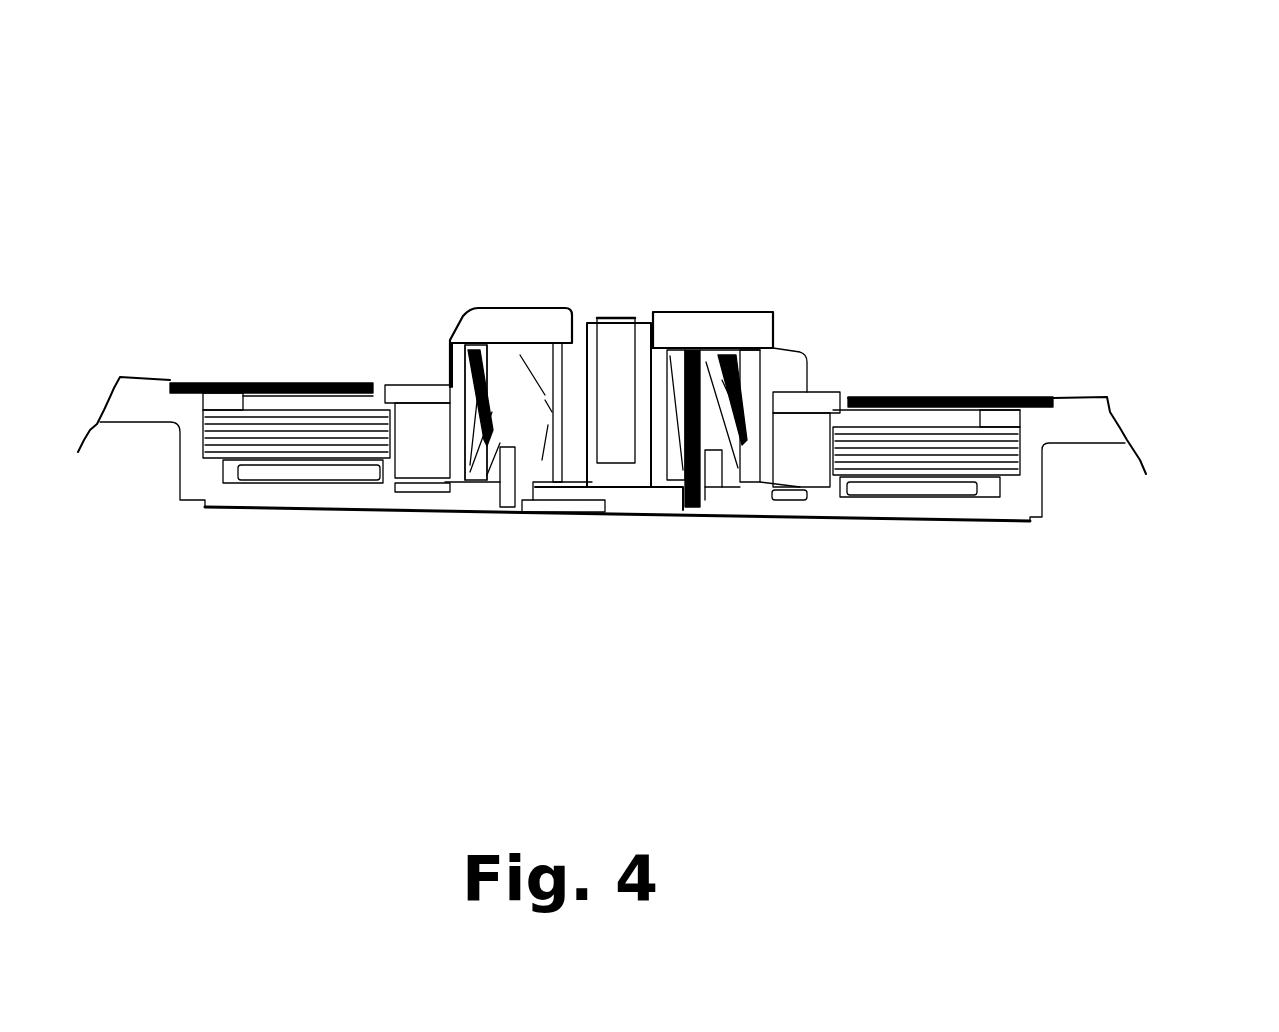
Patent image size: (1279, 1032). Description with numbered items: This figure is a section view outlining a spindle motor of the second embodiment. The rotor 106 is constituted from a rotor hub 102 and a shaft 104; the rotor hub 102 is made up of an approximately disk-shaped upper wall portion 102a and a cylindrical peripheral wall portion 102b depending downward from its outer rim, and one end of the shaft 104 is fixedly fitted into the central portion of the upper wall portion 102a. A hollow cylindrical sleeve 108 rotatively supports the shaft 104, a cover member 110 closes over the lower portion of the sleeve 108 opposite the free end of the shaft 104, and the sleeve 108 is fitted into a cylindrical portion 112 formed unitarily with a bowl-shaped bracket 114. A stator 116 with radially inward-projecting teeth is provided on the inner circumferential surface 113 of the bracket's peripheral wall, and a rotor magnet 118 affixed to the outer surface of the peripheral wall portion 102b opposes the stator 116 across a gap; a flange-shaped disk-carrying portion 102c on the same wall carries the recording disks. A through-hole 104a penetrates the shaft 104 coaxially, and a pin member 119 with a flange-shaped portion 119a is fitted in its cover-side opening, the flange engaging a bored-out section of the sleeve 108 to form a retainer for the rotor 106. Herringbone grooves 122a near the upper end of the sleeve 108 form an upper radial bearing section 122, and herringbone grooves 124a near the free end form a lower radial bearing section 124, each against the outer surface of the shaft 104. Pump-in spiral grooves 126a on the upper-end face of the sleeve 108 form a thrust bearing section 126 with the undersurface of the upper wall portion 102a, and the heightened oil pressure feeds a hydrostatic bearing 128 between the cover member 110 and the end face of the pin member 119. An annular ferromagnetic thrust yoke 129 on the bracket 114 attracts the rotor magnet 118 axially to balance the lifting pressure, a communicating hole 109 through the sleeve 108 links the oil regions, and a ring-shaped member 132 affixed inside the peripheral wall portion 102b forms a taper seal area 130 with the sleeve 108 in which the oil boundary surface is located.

The rotor hub 102 is at (741, 304).
The upper wall portion 102a is at (712, 330).
The peripheral wall portion 102b is at (455, 435).
The disk-carrying portion 102c is at (790, 370).
The shaft 104 is at (585, 355).
The through-hole 104a is at (610, 307).
The rotor 106 is at (625, 305).
The sleeve 108 is at (537, 377).
The communicating hole 109 is at (692, 428).
The cover member 110 is at (652, 508).
The cylindrical portion 112 is at (483, 497).
The inner circumferential surface 113 is at (1053, 398).
The bracket 114 is at (268, 495).
The stator 116 is at (280, 405).
The rotor magnet 118 is at (805, 437).
The pin member 119 is at (585, 498).
The flange-shaped portion 119a is at (545, 483).
The upper radial bearing section 122 is at (730, 350).
The herringbone grooves 122a is at (697, 362).
The lower radial bearing section 124 is at (685, 475).
The herringbone grooves 124a is at (700, 470).
The thrust bearing section 126 is at (500, 347).
The pump-in spiral grooves 126a is at (502, 358).
The hydrostatic bearing 128 is at (598, 490).
The thrust yoke 129 is at (722, 443).
The taper seal area 130 is at (440, 475).
The ring-shaped member 132 is at (462, 378).